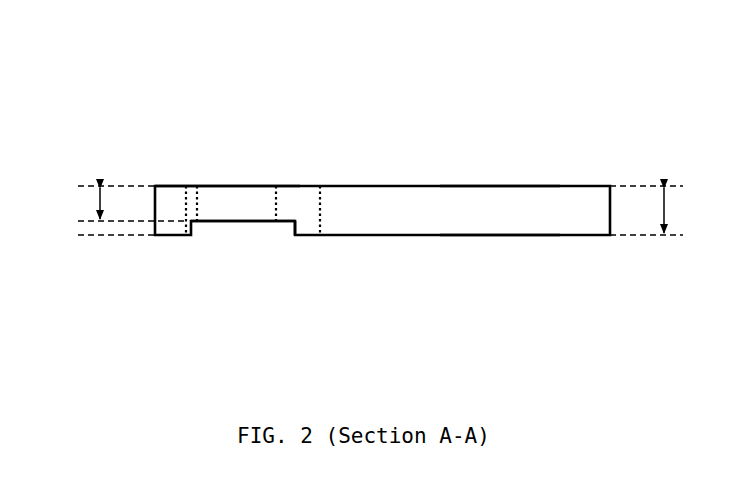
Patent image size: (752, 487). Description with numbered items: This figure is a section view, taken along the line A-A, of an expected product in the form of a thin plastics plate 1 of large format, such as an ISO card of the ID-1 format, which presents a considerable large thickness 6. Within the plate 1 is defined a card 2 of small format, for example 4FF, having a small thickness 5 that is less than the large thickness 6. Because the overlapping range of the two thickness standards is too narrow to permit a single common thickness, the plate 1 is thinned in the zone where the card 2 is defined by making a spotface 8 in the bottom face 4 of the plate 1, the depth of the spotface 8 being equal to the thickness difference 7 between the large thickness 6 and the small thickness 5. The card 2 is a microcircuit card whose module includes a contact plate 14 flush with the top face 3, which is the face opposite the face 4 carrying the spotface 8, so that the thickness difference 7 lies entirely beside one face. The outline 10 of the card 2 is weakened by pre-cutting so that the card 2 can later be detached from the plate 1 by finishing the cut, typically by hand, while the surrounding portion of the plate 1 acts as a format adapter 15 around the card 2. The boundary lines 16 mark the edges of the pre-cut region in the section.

The plastics plate 1 is at (435, 203).
The card 2 is at (252, 194).
The face 3 is at (540, 186).
The face 4 is at (540, 235).
The small thickness 5 is at (125, 203).
The large thickness 6 is at (653, 210).
The thickness difference 7 is at (102, 223).
The spotface 8 is at (235, 226).
The outline 10 is at (195, 186).
The contact plate 14 is at (222, 185).
The format adapter 15 is at (303, 197).
The boundary line 16 is at (186, 186).